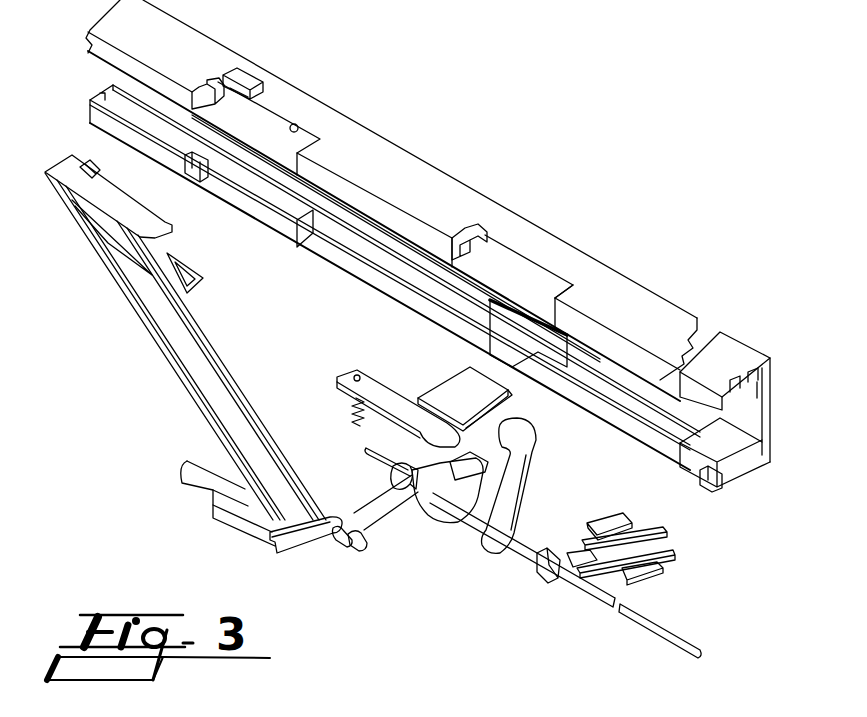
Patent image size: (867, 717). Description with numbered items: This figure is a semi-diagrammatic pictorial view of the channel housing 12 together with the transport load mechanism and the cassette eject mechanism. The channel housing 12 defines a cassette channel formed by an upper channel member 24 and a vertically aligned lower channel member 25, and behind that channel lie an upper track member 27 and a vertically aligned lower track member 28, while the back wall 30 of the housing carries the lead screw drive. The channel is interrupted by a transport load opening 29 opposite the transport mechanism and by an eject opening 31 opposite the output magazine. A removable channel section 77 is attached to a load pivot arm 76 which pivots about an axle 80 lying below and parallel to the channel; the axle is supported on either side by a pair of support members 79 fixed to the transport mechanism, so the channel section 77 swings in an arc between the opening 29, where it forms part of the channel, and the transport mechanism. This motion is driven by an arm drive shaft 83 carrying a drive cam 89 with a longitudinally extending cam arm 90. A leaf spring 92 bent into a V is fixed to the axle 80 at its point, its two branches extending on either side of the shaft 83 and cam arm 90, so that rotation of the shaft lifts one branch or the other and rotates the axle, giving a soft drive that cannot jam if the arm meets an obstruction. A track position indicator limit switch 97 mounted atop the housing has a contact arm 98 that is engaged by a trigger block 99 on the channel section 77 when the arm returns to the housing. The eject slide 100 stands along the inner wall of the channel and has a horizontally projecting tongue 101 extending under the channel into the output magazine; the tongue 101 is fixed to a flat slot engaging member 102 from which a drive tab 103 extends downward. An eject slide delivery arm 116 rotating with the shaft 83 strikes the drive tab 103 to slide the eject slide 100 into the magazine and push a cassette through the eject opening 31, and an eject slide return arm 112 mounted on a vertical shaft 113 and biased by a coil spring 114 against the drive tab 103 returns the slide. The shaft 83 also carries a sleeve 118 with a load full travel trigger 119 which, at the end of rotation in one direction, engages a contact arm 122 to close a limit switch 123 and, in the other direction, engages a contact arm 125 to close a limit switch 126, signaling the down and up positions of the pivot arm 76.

The channel housing 12 is at (446, 185).
The upper channel member 24 is at (190, 97).
The lower channel member 25 is at (187, 176).
The upper track member 27 is at (757, 360).
The lower track member 28 is at (122, 90).
The transport load opening 29 is at (297, 125).
The back wall 30 is at (765, 405).
The eject opening 31 is at (549, 273).
The load pivot arm 76 is at (234, 381).
The removable channel section 77 is at (63, 168).
The support members 79 is at (215, 500).
The axle 80 is at (353, 552).
The arm drive shaft 83 is at (702, 650).
The drive cam 89 is at (431, 512).
The cam arm 90 is at (448, 459).
The leaf spring 92 is at (387, 510).
The track position indicator limit switch 97 is at (250, 77).
The contact arm 98 is at (240, 93).
The trigger block 99 is at (90, 161).
The eject slide 100 is at (505, 315).
The tongue 101 is at (490, 373).
The slot engaging member 102 is at (512, 393).
The drive tab 103 is at (445, 425).
The eject slide return arm 112 is at (384, 402).
The vertical shaft 113 is at (350, 381).
The coil spring 114 is at (352, 421).
The eject slide delivery arm 116 is at (531, 460).
The sleeve 118 is at (543, 580).
The load full travel trigger 119 is at (577, 548).
The contact arm 122 is at (645, 535).
The limit switch 123 is at (606, 520).
The contact arm 125 is at (663, 558).
The limit switch 126 is at (646, 574).